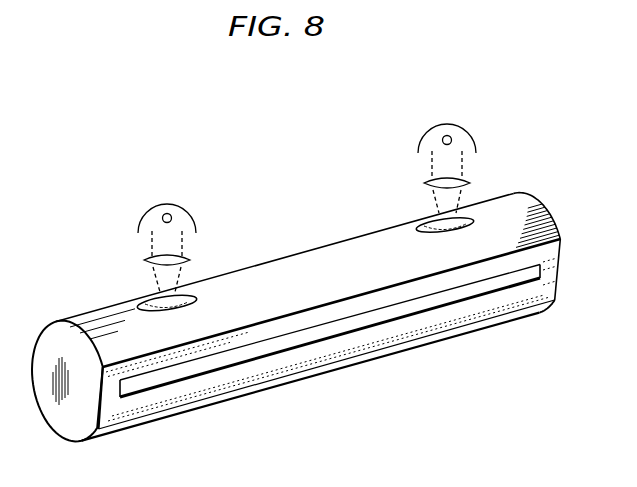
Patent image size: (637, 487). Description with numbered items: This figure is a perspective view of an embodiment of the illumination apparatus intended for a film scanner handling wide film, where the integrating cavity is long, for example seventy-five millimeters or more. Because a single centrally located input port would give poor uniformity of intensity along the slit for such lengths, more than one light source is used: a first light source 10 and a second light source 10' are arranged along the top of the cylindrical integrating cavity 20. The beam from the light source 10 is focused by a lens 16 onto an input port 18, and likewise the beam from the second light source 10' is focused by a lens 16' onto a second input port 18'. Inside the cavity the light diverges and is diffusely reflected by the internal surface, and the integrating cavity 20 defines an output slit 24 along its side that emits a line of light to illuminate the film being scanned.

The light source 10 is at (178, 210).
The lens 16 is at (186, 255).
The input port 18 is at (152, 288).
The light input source 10' is at (458, 132).
The lens 16' is at (466, 176).
The input port 18' is at (428, 208).
The cylindrical integrating cavity 20 is at (544, 212).
The output slit 24 is at (511, 277).